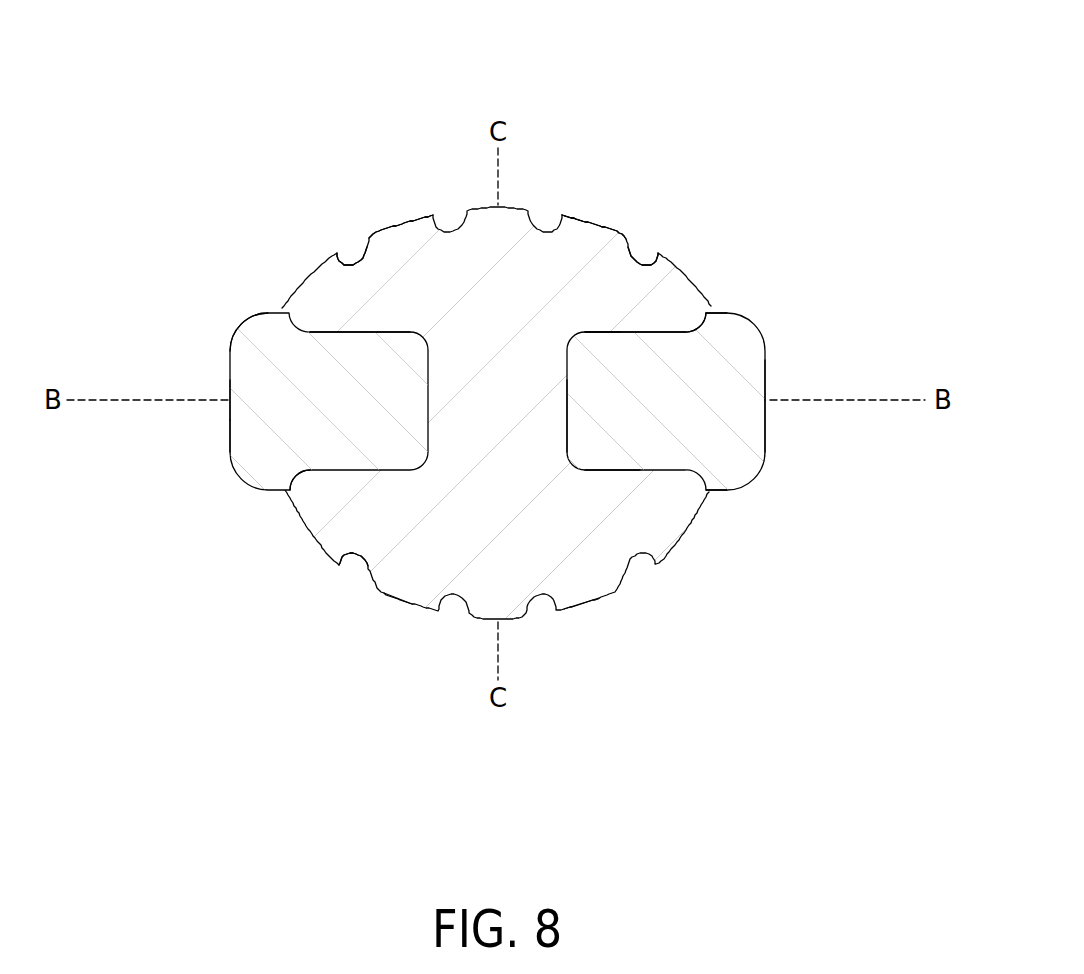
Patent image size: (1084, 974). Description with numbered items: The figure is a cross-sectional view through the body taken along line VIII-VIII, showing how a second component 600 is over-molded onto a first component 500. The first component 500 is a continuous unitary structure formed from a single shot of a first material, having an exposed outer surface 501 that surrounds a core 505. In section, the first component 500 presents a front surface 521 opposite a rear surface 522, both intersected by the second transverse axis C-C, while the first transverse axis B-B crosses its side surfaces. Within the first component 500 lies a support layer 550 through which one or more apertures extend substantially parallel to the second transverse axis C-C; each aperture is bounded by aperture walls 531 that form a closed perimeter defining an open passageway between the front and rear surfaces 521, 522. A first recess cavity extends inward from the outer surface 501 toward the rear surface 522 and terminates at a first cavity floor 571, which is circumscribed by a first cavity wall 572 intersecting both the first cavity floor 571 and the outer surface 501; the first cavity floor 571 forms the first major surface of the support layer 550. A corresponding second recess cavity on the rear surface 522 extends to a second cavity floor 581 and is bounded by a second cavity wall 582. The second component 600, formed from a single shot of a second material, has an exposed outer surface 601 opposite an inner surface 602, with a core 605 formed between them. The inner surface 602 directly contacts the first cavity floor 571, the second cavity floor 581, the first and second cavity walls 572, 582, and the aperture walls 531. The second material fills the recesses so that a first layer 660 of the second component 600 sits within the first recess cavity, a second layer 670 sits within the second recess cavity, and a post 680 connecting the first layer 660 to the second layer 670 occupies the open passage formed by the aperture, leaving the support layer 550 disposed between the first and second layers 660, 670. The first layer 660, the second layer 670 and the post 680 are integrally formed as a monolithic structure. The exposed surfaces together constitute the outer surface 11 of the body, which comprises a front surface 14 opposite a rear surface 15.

The outer surface 11 is at (338, 265).
The front surface 14 is at (433, 216).
The rear surface 15 is at (587, 603).
The first component 500 is at (248, 360).
The outer surface 501 is at (232, 444).
The core 505 is at (287, 353).
The front surface 521 is at (726, 317).
The rear surface 522 is at (727, 492).
The aperture walls 531 is at (570, 420).
The support layer 550 is at (273, 402).
The first cavity floor 571 is at (593, 332).
The first cavity wall 572 is at (720, 312).
The second cavity floor 581 is at (585, 472).
The second cavity wall 582 is at (307, 478).
The second component 600 is at (612, 223).
The outer surface 601 is at (577, 215).
The inner surface 602 is at (428, 373).
The core 605 is at (500, 405).
The first layer 660 is at (531, 287).
The second layer 670 is at (494, 550).
The post 680 is at (472, 435).